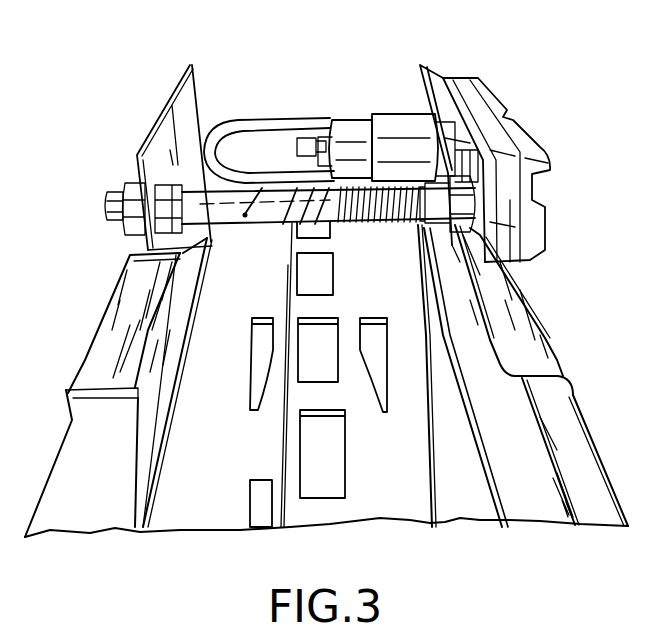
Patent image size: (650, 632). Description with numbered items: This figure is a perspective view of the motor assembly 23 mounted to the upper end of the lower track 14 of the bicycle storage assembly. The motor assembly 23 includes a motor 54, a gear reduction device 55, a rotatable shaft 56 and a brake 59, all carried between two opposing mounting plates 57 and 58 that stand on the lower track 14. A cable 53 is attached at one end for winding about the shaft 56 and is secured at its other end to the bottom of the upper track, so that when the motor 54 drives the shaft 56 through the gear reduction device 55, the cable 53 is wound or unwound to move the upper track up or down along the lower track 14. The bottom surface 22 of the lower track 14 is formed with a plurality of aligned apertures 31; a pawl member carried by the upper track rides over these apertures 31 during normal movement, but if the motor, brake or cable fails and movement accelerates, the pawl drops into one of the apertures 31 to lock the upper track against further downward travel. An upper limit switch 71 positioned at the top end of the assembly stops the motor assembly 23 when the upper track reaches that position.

The lower track 14 is at (567, 478).
The bottom surface 22 is at (443, 353).
The motor assembly 23 is at (248, 106).
The aligned apertures 31 is at (313, 482).
The cable 53 is at (438, 505).
The motor 54 is at (400, 132).
The gear reduction device 55 is at (348, 130).
The rotatable shaft 56 is at (207, 210).
The mounting plate 57 is at (137, 154).
The mounting plate 58 is at (454, 130).
The brake 59 is at (301, 136).
The upper limit switch 71 is at (260, 497).